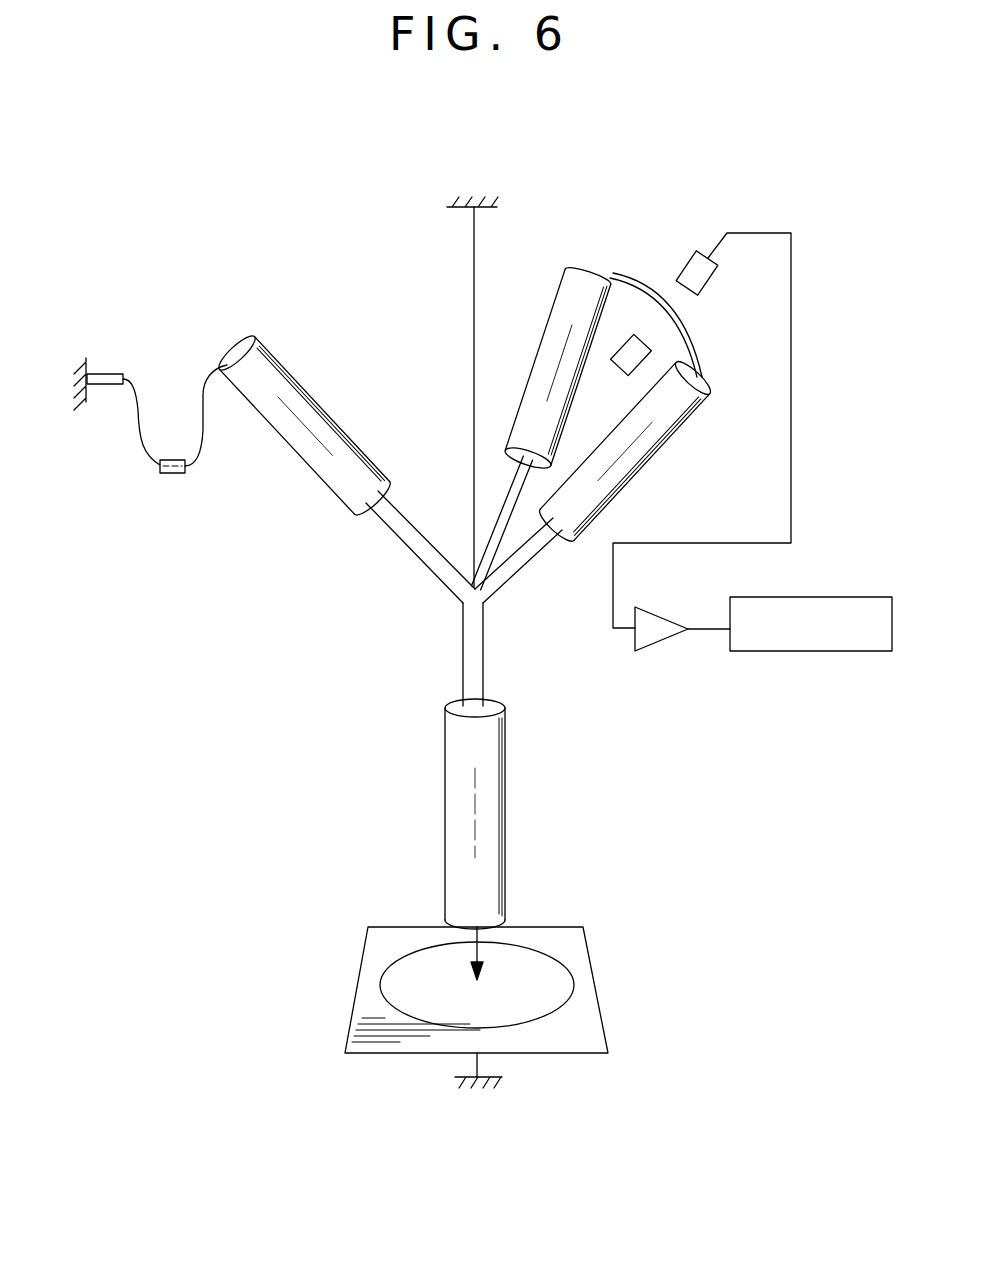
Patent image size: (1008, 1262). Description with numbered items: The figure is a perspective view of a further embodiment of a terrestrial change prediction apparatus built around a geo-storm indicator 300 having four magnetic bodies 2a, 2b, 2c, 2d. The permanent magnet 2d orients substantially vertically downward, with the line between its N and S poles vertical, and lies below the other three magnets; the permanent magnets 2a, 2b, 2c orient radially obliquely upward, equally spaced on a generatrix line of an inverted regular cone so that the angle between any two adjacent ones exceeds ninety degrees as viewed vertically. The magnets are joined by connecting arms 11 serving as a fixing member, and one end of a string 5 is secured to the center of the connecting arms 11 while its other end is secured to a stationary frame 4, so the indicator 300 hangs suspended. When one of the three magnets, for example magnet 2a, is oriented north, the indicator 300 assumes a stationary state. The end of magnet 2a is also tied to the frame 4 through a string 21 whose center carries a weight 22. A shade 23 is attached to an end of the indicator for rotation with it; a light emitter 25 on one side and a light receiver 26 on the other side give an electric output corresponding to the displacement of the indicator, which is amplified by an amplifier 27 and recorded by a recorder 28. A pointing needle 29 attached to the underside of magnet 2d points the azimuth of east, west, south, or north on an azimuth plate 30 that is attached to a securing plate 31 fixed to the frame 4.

The stationary frame 4 is at (478, 203).
The string 5 is at (470, 350).
The geo-storm indicator 300 is at (558, 232).
The connecting arms 11 is at (533, 566).
The permanent magnet 2a is at (226, 350).
The permanent magnet 2b is at (582, 266).
The permanent magnet 2c is at (715, 382).
The permanent magnet 2d is at (510, 810).
The string 21 is at (140, 440).
The weight 22 is at (172, 475).
The shade 23 is at (693, 333).
The light emitter 25 is at (615, 370).
The light receiver 26 is at (712, 282).
The amplifier 27 is at (660, 641).
The recorder 28 is at (855, 652).
The pointing needle 29 is at (468, 953).
The azimuth plate 30 is at (575, 973).
The securing plate 31 is at (547, 1040).